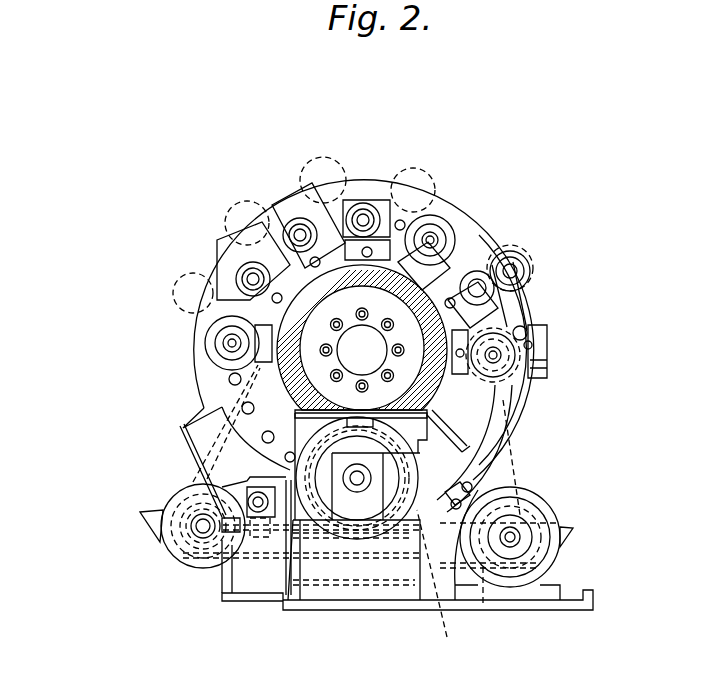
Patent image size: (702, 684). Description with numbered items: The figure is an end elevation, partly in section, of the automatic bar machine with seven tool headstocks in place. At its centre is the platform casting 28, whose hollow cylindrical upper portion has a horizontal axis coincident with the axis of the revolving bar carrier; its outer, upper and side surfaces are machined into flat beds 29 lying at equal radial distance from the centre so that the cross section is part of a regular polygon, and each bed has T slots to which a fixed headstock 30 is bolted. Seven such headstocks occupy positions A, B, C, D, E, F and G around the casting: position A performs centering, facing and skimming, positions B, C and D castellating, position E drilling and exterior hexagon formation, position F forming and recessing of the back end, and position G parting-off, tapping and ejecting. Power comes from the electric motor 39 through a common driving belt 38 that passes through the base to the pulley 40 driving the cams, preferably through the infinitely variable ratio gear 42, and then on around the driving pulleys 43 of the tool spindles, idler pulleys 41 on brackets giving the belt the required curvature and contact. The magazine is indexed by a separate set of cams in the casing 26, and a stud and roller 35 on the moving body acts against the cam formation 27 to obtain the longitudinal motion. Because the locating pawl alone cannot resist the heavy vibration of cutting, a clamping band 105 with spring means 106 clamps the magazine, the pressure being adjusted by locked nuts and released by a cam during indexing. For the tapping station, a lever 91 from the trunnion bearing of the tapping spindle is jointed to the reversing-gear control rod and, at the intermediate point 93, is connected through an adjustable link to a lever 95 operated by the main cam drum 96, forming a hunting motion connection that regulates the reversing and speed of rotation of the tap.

The casing 26 is at (217, 467).
The cam formation 27 is at (288, 472).
The casting 28 is at (170, 487).
The beds 29 is at (233, 470).
The headstock 30 is at (217, 267).
The stud and roller 35 is at (357, 478).
The driving belt 38 is at (307, 170).
The electric motor 39 is at (550, 517).
The pulley 40 is at (190, 557).
The idler pulleys 41 is at (183, 283).
The infinitely variable ratio gear 42 is at (208, 570).
The driving pulleys 43 is at (213, 352).
The lever 91 is at (531, 363).
The joint 93 is at (548, 375).
The lever 95 is at (490, 397).
The main cam drum 96 is at (450, 589).
The clamping band 105 is at (192, 362).
The spring means 106 is at (460, 497).
The position A is at (202, 333).
The position B is at (217, 233).
The position C is at (273, 200).
The position D is at (372, 198).
The position E is at (443, 247).
The position F is at (532, 251).
The position G is at (540, 323).